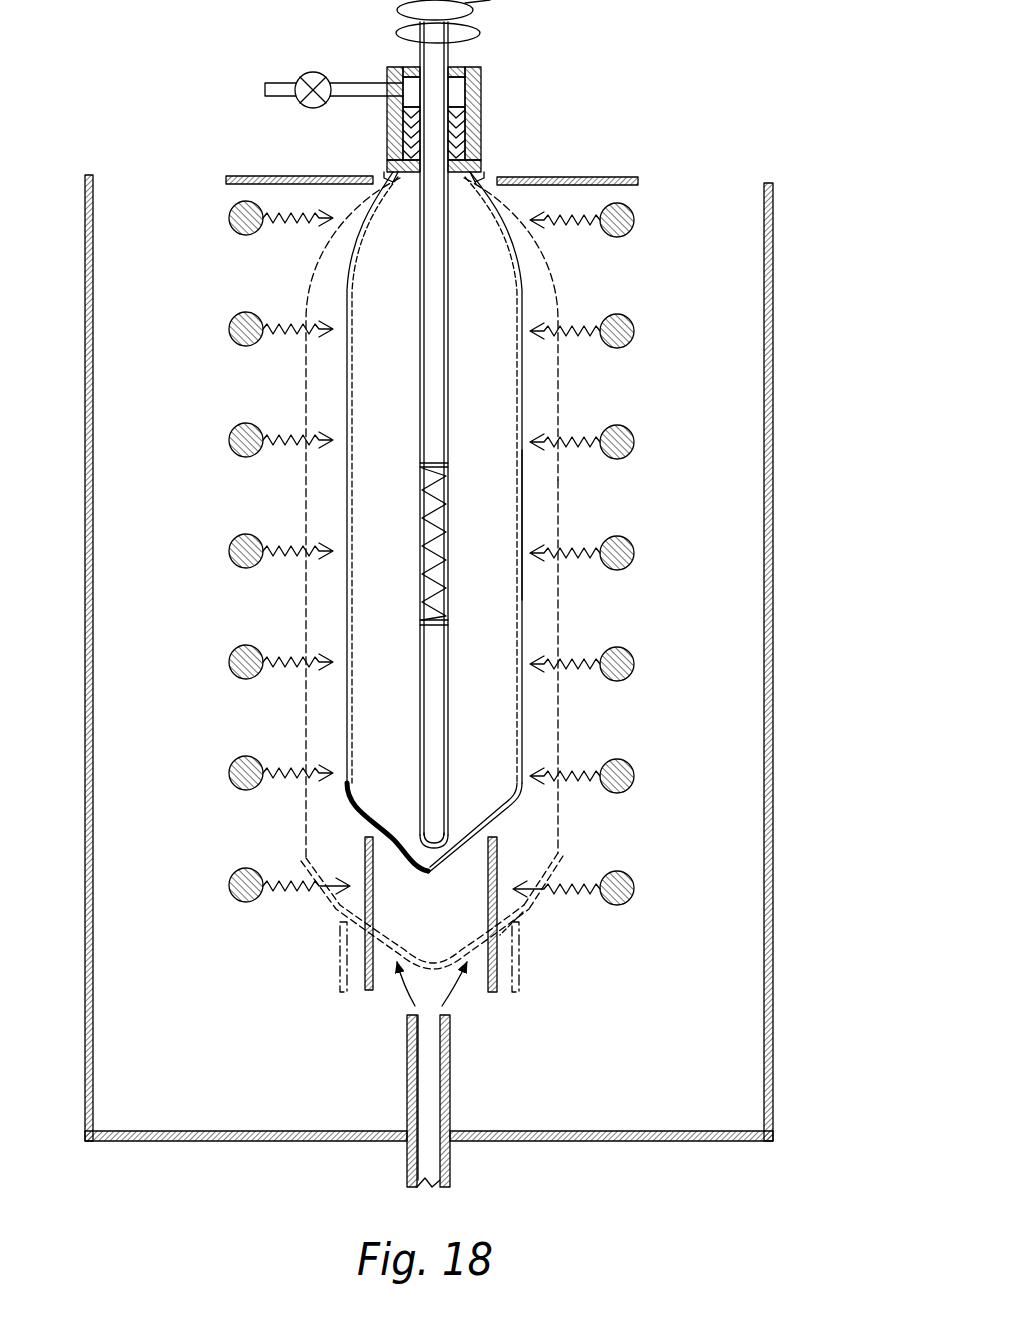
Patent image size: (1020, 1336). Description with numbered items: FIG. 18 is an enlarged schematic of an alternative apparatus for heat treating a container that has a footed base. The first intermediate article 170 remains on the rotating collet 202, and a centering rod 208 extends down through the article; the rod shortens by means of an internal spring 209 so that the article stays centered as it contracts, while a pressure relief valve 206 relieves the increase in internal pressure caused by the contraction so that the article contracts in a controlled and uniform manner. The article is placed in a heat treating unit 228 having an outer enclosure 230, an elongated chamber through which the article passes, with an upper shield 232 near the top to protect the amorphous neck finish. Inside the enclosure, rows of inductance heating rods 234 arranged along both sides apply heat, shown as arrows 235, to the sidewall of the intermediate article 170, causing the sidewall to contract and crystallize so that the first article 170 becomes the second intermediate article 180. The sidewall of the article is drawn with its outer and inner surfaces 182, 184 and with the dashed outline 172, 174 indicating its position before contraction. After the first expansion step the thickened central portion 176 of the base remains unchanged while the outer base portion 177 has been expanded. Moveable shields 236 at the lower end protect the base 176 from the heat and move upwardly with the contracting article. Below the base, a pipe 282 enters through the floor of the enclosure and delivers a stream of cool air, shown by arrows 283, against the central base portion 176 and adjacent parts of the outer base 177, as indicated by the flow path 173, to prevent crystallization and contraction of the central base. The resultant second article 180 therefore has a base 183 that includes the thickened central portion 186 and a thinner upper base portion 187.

The pressure relief valve 206 is at (305, 72).
The rotating collet 202 is at (489, 96).
The upper heat shield 232 is at (536, 178).
The container wall 182 is at (522, 278).
The liner 172 is at (557, 287).
The heat 235 is at (312, 318).
The liner 174 is at (558, 375).
The container wall 184 is at (522, 400).
The inductance heating rods 234 is at (248, 422).
The first intermediate article 170 is at (566, 487).
The second intermediate article 180 is at (528, 517).
The internal spring 209 is at (420, 578).
The heat treating unit 228 is at (778, 604).
The outer enclosure 230 is at (775, 680).
The centering rod 208 is at (420, 712).
The base 183 is at (478, 818).
The thickened central portion 186 is at (450, 847).
The thinner upper base portion 187 is at (513, 808).
The outer base portion 177 is at (552, 870).
The base 176 is at (450, 937).
The flow path 173 is at (528, 918).
The moveable shields 236 is at (363, 988).
The stream of cool air 283 is at (447, 990).
The pipe 282 is at (450, 1163).